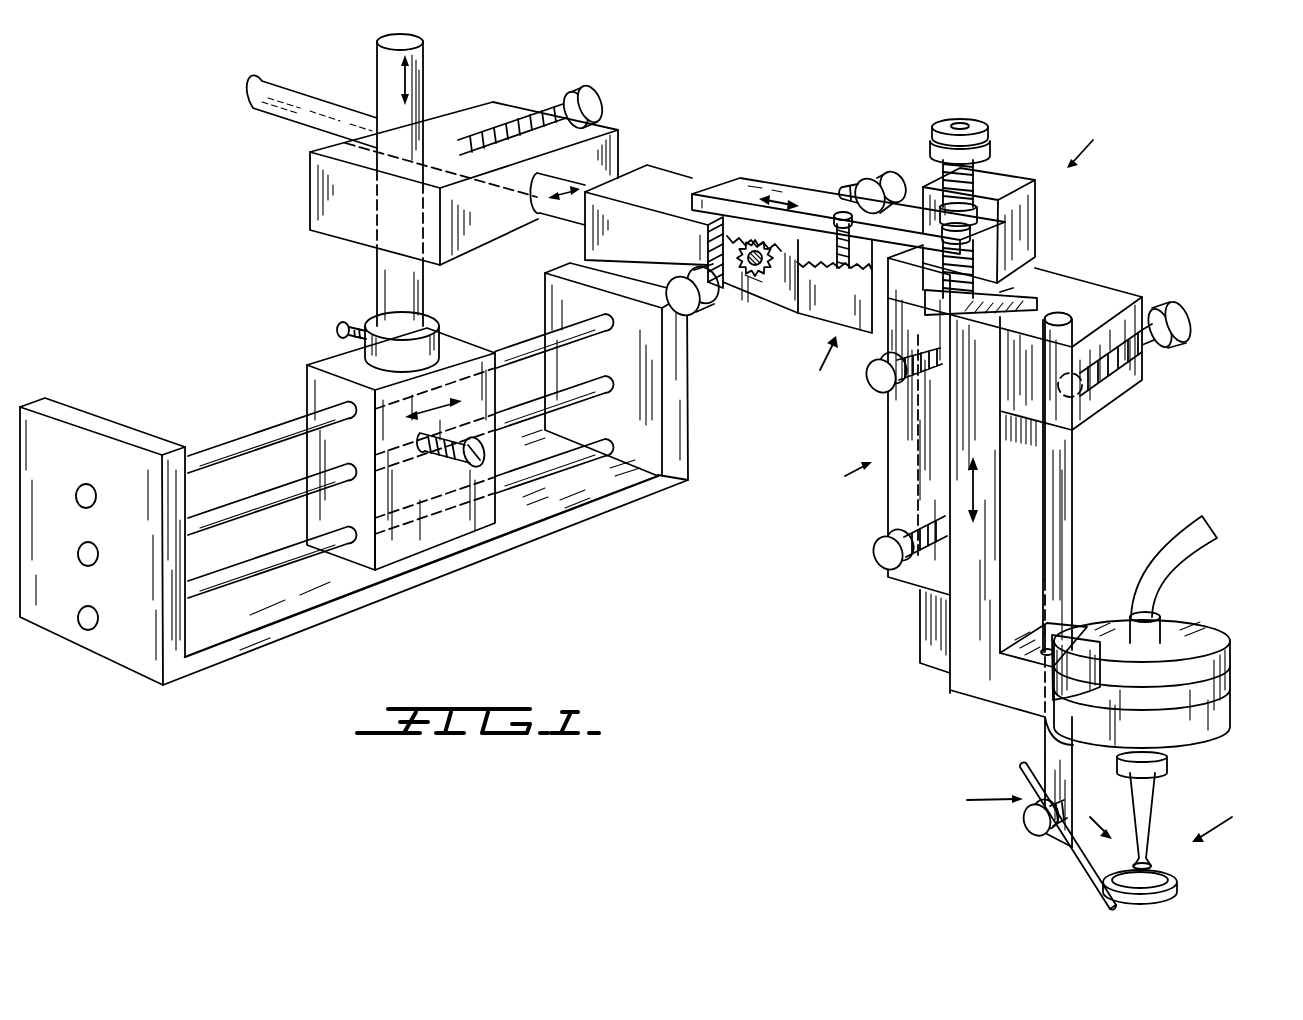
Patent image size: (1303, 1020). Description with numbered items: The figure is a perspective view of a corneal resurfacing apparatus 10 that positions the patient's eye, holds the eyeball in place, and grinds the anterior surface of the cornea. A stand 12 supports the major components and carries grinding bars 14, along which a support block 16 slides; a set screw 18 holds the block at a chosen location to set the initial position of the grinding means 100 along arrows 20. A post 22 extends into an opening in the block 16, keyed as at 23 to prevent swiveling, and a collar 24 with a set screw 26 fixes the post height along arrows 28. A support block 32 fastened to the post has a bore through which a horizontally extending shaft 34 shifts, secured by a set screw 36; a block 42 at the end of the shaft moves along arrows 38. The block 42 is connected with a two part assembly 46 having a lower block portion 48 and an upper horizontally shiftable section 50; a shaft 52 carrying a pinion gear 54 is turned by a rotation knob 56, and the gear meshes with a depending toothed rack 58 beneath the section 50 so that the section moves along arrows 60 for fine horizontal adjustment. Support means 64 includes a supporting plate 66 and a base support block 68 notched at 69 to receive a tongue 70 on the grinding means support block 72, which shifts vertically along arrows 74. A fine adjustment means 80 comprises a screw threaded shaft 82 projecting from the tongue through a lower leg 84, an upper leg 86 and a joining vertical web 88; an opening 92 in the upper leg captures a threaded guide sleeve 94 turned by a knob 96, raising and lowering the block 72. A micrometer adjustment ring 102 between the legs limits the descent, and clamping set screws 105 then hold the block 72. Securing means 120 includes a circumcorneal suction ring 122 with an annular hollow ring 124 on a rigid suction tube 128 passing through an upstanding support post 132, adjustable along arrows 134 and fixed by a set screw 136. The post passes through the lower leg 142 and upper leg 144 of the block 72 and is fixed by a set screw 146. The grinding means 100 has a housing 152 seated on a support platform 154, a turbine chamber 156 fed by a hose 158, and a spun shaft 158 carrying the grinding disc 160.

The corneal resurfacing apparatus 10 is at (176, 287).
The stand 12 is at (150, 700).
The grinding bars 14 is at (260, 480).
The support block 16 is at (463, 527).
The set screw 18 is at (447, 450).
The arrows 20 is at (432, 398).
The post 22 is at (392, 268).
The key 23 is at (378, 293).
The collar 24 is at (440, 350).
The set screw 26 is at (336, 331).
The arrows 28 is at (413, 96).
The support block 32 is at (308, 179).
The horizontally extending shaft 34 is at (337, 100).
The set screw 36 is at (597, 97).
The arrows 38 is at (573, 197).
The block 42 is at (677, 182).
The two part assembly 46 is at (804, 366).
The lower block portion 48 is at (788, 284).
The upper horizontally shiftable section 50 is at (808, 197).
The shaft 52 is at (738, 278).
The pinion gear 54 is at (763, 277).
The rotation knob 56 is at (684, 280).
The rack 58 is at (742, 229).
The arrows 60 is at (782, 197).
The support means 64 is at (869, 402).
The supporting plate 66 is at (875, 328).
The base support block 68 is at (890, 503).
The notch 69 is at (942, 306).
The tongue 70 is at (985, 295).
The grinding means support block 72 is at (962, 641).
The arrows 74 is at (977, 489).
The fine adjustment means 80 is at (1094, 143).
The screw threaded shaft 82 is at (1013, 288).
The lower leg 84 is at (976, 244).
The upper leg 86 is at (905, 178).
The vertical web 88 is at (1027, 204).
The opening 92 is at (1005, 176).
The guide sleeve 94 is at (981, 161).
The knob 96 is at (935, 137).
The grinding means 100 is at (1234, 823).
The micrometer adjustment ring 102 is at (908, 255).
The clamping set screws 105 is at (877, 399).
The securing means 120 is at (995, 803).
The circumcorneal suction ring 122 is at (1173, 880).
The annular hollow ring 124 is at (1175, 892).
The suction tube 128 is at (1100, 864).
The support post 132 is at (1074, 521).
The arrows 134 is at (1103, 810).
The set screw 136 is at (1033, 834).
The lower leg 142 is at (990, 678).
The upper leg 144 is at (1108, 396).
The set screw 146 is at (1188, 306).
The housing 152 is at (1233, 656).
The support platform 154 is at (1235, 723).
The turbine chamber 156 is at (1168, 761).
The hose 158 is at (1180, 566).
The grinding disc 160 is at (1113, 905).